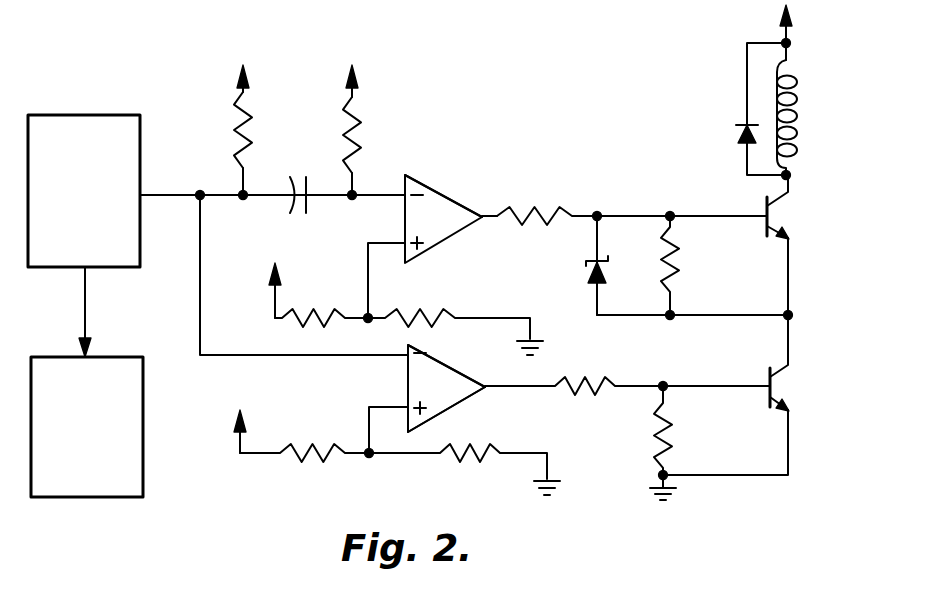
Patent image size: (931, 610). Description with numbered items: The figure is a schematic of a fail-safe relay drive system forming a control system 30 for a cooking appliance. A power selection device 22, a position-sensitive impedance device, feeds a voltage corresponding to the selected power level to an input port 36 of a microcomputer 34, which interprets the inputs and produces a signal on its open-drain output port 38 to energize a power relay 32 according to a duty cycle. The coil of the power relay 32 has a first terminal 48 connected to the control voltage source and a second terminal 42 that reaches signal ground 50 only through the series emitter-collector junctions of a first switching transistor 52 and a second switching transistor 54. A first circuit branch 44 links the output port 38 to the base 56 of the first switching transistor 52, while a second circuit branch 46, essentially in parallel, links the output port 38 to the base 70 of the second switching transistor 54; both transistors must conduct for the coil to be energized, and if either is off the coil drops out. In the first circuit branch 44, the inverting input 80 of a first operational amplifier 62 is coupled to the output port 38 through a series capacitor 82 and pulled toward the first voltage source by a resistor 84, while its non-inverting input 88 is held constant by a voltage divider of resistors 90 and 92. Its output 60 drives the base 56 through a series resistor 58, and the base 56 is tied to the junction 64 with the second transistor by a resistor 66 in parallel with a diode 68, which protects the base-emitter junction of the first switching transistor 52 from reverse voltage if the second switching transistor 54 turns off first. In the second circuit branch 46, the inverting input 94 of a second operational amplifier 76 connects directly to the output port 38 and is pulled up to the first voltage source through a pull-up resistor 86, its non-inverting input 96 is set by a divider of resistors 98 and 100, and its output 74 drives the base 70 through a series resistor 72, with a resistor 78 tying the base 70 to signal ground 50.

The selection device 22 is at (143, 470).
The control system 30 is at (414, 62).
The power relay 32 is at (797, 104).
The microcomputer 34 is at (88, 115).
The input port 36 is at (106, 268).
The output port 38 is at (143, 193).
The second terminal 42 is at (789, 172).
The first circuit branch 44 is at (500, 129).
The second circuit branch 46 is at (553, 406).
The first terminal 48 is at (790, 47).
The signal ground 50 is at (660, 478).
The first switching transistor 52 is at (778, 206).
The second switching transistor 54 is at (780, 372).
The base of first transistor 56 is at (694, 213).
The series resistor 58 is at (566, 208).
The output of first op-amp 60 is at (485, 219).
The first operational amplifier 62 is at (455, 192).
The junction 64 is at (788, 270).
The resistor 66 is at (683, 273).
The diode 68 is at (588, 266).
The base of second transistor 70 is at (757, 385).
The series resistor 72 is at (592, 382).
The output of second op-amp 74 is at (488, 385).
The second operational amplifier 76 is at (448, 410).
The resistor 78 is at (672, 446).
The inverting input of first op-amp 80 is at (373, 193).
The series capacitor 82 is at (300, 176).
The resistor 84 is at (360, 130).
The pull-up resistor 86 is at (250, 132).
The non-inverting input of first op-amp 88 is at (390, 247).
The resistor 90 is at (294, 316).
The resistor 92 is at (427, 316).
The inverting input of second op-amp 94 is at (362, 357).
The non-inverting input of second op-amp 96 is at (372, 404).
The resistor 98 is at (296, 457).
The resistor 100 is at (451, 456).